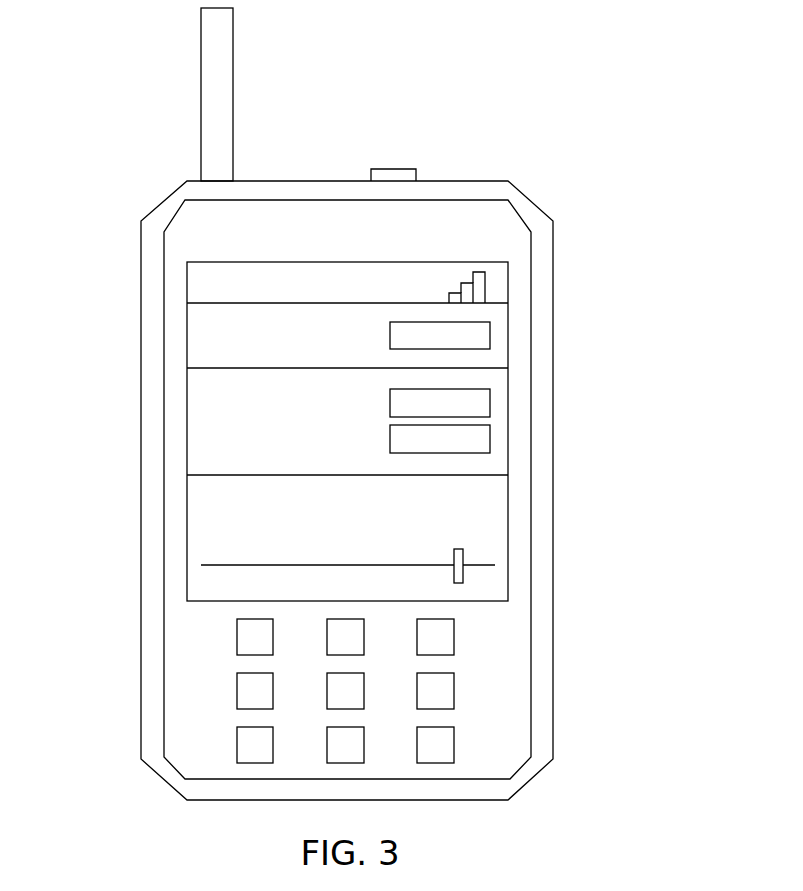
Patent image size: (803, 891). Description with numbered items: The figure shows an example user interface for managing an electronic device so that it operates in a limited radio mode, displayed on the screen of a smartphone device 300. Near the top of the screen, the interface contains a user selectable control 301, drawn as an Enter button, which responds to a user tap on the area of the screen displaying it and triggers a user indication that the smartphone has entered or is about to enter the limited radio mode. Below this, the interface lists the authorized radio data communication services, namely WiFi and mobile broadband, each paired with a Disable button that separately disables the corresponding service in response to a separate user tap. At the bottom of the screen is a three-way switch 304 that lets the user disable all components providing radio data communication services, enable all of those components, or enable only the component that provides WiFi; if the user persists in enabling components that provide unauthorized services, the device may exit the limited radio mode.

The smartphone device 300 is at (274, 181).
The user selectable control 301 is at (490, 334).
The three-way switch 304 is at (472, 555).